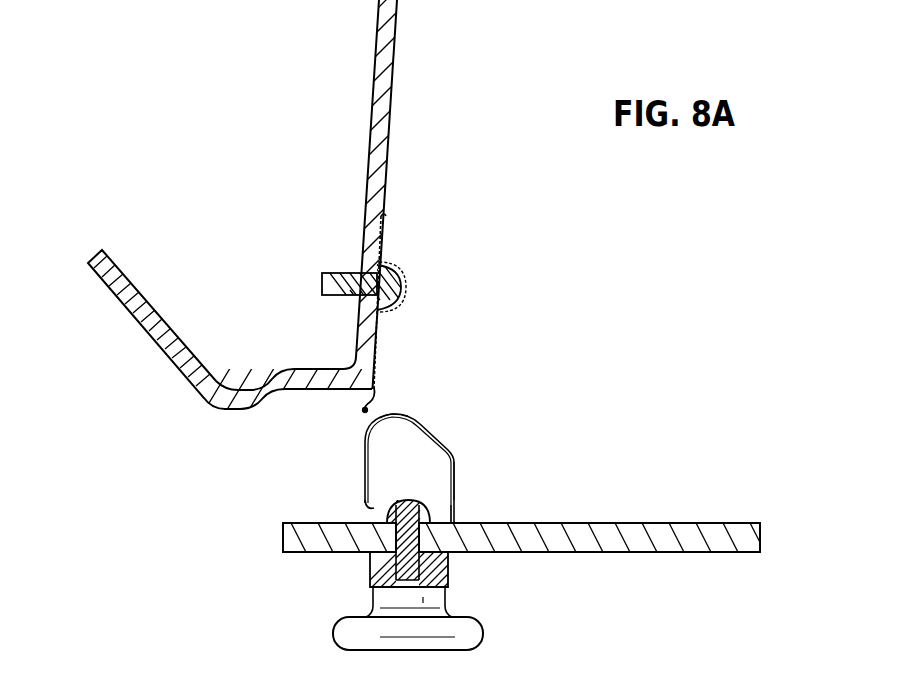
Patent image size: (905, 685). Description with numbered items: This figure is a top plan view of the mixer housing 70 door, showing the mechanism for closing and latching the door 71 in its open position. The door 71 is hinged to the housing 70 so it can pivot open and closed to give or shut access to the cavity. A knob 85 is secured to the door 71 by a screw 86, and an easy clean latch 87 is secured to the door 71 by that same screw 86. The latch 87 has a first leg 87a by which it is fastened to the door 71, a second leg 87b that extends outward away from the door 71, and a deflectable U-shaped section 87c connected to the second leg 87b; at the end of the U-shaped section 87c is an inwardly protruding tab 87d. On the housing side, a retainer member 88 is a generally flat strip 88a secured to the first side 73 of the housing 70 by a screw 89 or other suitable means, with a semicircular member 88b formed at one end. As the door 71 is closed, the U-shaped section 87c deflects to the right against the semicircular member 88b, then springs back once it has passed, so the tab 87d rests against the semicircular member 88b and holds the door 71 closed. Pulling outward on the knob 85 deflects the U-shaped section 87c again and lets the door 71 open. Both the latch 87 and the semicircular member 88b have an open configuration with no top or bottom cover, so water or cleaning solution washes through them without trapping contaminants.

The mixer housing 70 is at (135, 351).
The door 71 is at (645, 516).
The first side 73 is at (388, 163).
The knob 85 is at (483, 631).
The screw 86 is at (405, 507).
The easy clean latch 87 is at (352, 470).
The first leg 87a is at (453, 520).
The second leg 87b is at (456, 468).
The deflectable U-shaped section 87c is at (422, 428).
The inwardly protruding tab 87d is at (364, 505).
The retainer member 88 is at (404, 324).
The flat strip 88a is at (383, 233).
The semicircular member 88b is at (380, 384).
The screw 89 is at (400, 277).